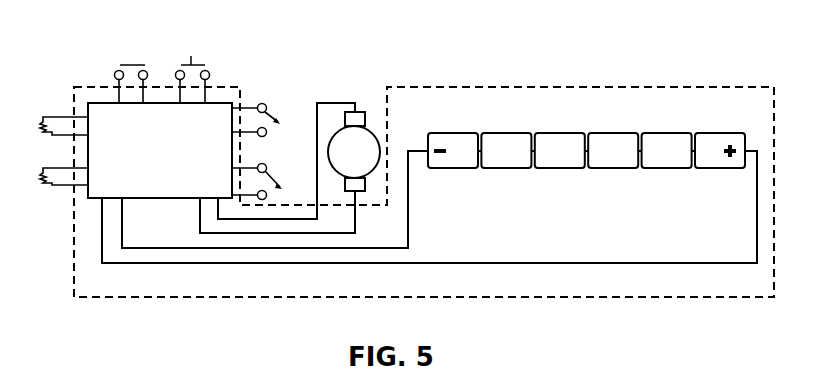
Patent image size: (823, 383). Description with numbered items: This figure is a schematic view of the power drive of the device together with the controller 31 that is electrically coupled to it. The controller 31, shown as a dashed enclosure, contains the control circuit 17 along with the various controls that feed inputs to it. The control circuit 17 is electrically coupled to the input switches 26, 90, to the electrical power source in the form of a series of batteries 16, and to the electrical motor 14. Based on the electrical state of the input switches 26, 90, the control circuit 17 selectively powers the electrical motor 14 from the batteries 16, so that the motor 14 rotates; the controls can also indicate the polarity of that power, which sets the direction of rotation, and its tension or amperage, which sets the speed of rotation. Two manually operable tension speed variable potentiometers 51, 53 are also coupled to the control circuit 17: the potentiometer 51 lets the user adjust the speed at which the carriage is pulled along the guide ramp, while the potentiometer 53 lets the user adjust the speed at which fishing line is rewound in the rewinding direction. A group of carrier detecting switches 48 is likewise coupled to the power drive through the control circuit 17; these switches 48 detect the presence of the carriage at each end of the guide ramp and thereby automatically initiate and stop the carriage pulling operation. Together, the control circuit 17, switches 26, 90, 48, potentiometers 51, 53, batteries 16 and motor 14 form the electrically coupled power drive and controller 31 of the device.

The controller 31 is at (100, 78).
The control circuit 17 is at (207, 190).
The input switch 26 is at (132, 63).
The input switch 90 is at (205, 62).
The tension speed variable potentiometer 51 is at (53, 115).
The tension speed variable potentiometer 53 is at (62, 186).
The carrier detecting switch 48 is at (252, 105).
The electrical motor 14 is at (368, 133).
The batteries 16 is at (603, 162).